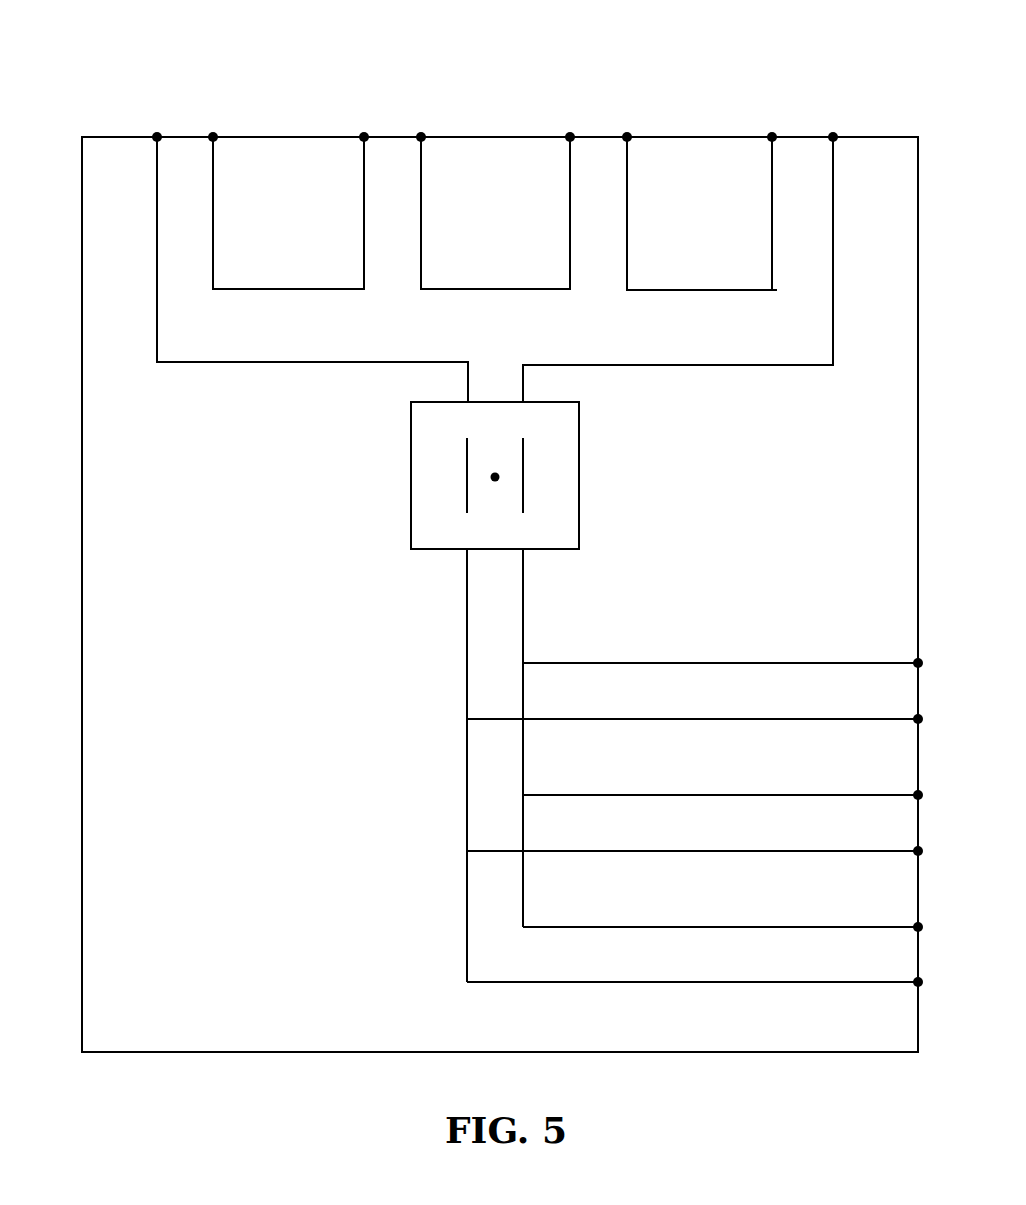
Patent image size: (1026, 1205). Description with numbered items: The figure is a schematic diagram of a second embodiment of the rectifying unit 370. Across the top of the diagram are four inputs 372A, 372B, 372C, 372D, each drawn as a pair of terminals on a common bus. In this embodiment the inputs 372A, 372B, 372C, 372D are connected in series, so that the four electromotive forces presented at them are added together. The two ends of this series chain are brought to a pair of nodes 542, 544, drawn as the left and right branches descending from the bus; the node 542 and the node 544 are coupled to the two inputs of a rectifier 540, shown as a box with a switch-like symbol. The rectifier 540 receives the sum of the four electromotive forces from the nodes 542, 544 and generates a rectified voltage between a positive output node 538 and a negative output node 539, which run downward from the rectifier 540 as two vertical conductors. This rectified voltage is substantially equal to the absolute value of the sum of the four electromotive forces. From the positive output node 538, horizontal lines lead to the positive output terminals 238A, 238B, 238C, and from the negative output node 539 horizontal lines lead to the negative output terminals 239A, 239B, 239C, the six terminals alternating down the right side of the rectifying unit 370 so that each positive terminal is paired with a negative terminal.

The rectifying unit 370 is at (253, 72).
The input 372A is at (234, 120).
The input 372B is at (437, 120).
The input 372C is at (641, 120).
The input 372D is at (844, 120).
The node 542 is at (271, 365).
The node 544 is at (662, 366).
The rectifier 540 is at (411, 512).
The positive output node 538 is at (523, 653).
The negative output node 539 is at (467, 698).
The positive output terminal 238A is at (853, 663).
The negative output terminal 239A is at (853, 719).
The positive output terminal 238B is at (853, 795).
The negative output terminal 239B is at (853, 851).
The positive output terminal 238C is at (853, 927).
The negative output terminal 239C is at (853, 982).